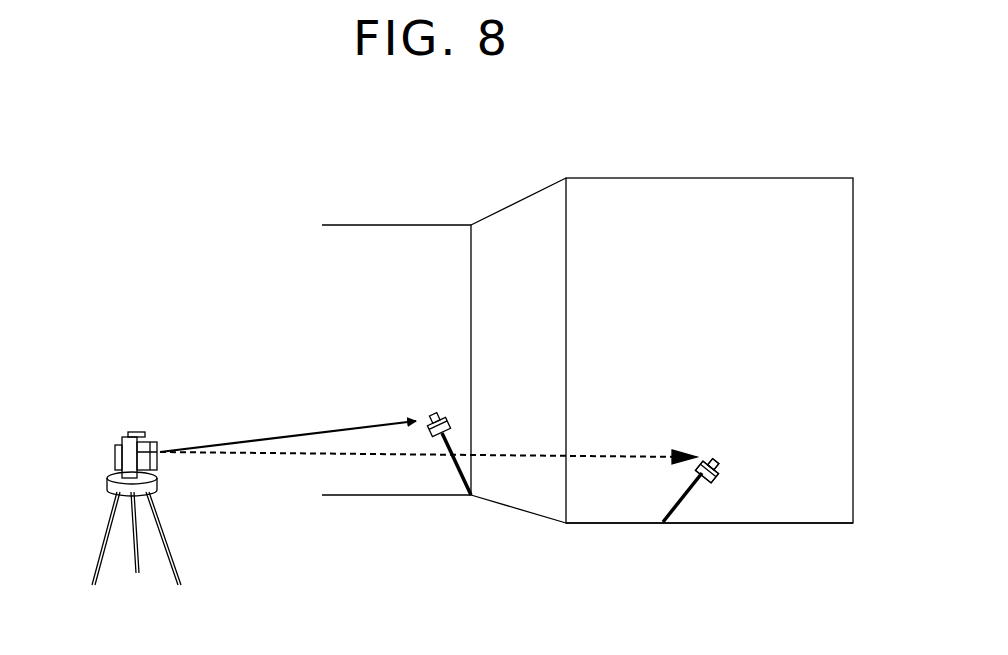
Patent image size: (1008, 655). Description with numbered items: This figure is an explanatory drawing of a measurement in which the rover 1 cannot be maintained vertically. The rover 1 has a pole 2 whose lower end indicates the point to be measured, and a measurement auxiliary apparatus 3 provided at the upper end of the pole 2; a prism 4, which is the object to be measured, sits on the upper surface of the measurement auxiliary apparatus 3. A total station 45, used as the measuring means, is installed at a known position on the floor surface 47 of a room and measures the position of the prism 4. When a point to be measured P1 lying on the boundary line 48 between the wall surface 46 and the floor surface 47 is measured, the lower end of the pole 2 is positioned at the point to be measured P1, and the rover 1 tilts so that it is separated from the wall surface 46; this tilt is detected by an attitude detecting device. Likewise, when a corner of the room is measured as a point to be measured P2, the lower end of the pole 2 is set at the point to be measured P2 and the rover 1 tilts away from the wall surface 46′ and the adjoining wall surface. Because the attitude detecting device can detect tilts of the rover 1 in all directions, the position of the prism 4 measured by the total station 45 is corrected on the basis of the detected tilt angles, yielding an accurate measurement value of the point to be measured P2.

The rover 1 is at (435, 397).
The pole 2 is at (683, 502).
The measurement auxiliary apparatus 3 is at (716, 480).
The prism 4 is at (717, 452).
The total station 45 is at (115, 445).
The wall surface 46 is at (705, 227).
The wall surface 46′ is at (515, 255).
The floor surface 47 is at (730, 612).
The boundary line 48 is at (790, 523).
The point to be measured P1 is at (657, 530).
The point to be measured P2 is at (470, 498).